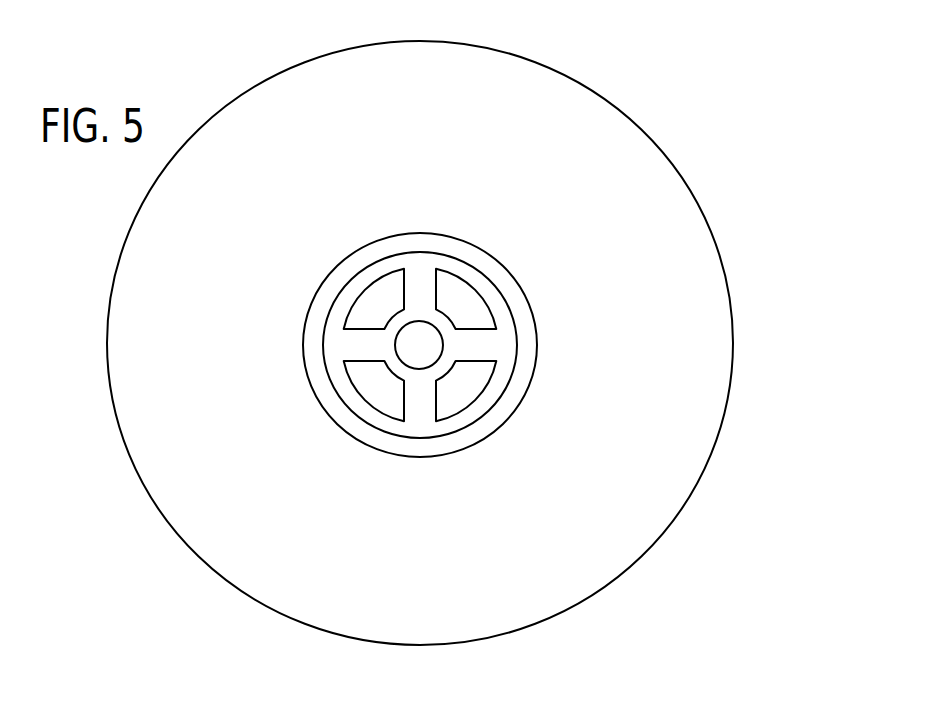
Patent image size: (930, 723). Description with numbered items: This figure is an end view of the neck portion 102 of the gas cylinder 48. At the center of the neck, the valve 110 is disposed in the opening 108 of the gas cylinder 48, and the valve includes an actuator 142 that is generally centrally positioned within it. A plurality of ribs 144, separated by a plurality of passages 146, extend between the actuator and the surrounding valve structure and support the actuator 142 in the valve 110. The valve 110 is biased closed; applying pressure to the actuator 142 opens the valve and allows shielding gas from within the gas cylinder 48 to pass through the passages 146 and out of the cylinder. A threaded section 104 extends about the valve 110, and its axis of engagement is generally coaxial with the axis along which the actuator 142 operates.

The gas cylinder 48 is at (542, 65).
The neck portion 102 is at (304, 114).
The threaded section 104 is at (513, 390).
The opening 108 is at (440, 437).
The valve 110 is at (490, 345).
The actuator 142 is at (396, 343).
The ribs 144 is at (418, 275).
The passages 146 is at (368, 302).